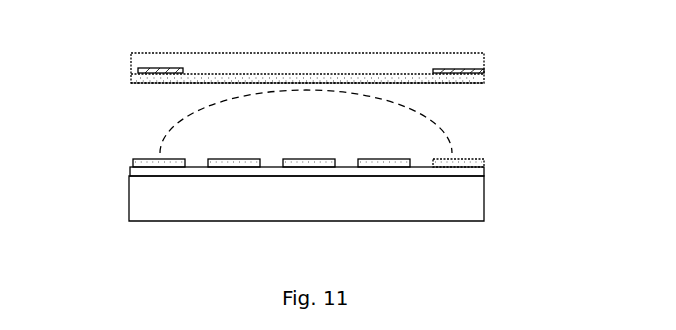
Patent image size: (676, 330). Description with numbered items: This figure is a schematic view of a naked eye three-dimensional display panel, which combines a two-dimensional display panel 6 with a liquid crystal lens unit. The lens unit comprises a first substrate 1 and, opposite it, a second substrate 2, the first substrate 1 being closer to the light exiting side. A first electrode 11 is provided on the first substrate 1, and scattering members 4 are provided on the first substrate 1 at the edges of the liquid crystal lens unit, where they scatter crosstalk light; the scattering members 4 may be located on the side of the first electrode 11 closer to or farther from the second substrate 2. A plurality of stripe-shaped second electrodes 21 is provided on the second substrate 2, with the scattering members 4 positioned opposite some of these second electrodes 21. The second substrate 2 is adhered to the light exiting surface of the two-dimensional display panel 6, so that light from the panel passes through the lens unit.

The first substrate 1 is at (340, 58).
The scattering members 4 is at (138, 70).
The first electrode 11 is at (138, 85).
The stripe-shaped second electrodes 21 is at (133, 162).
The second substrate 2 is at (484, 170).
The 2D display panel 6 is at (360, 200).